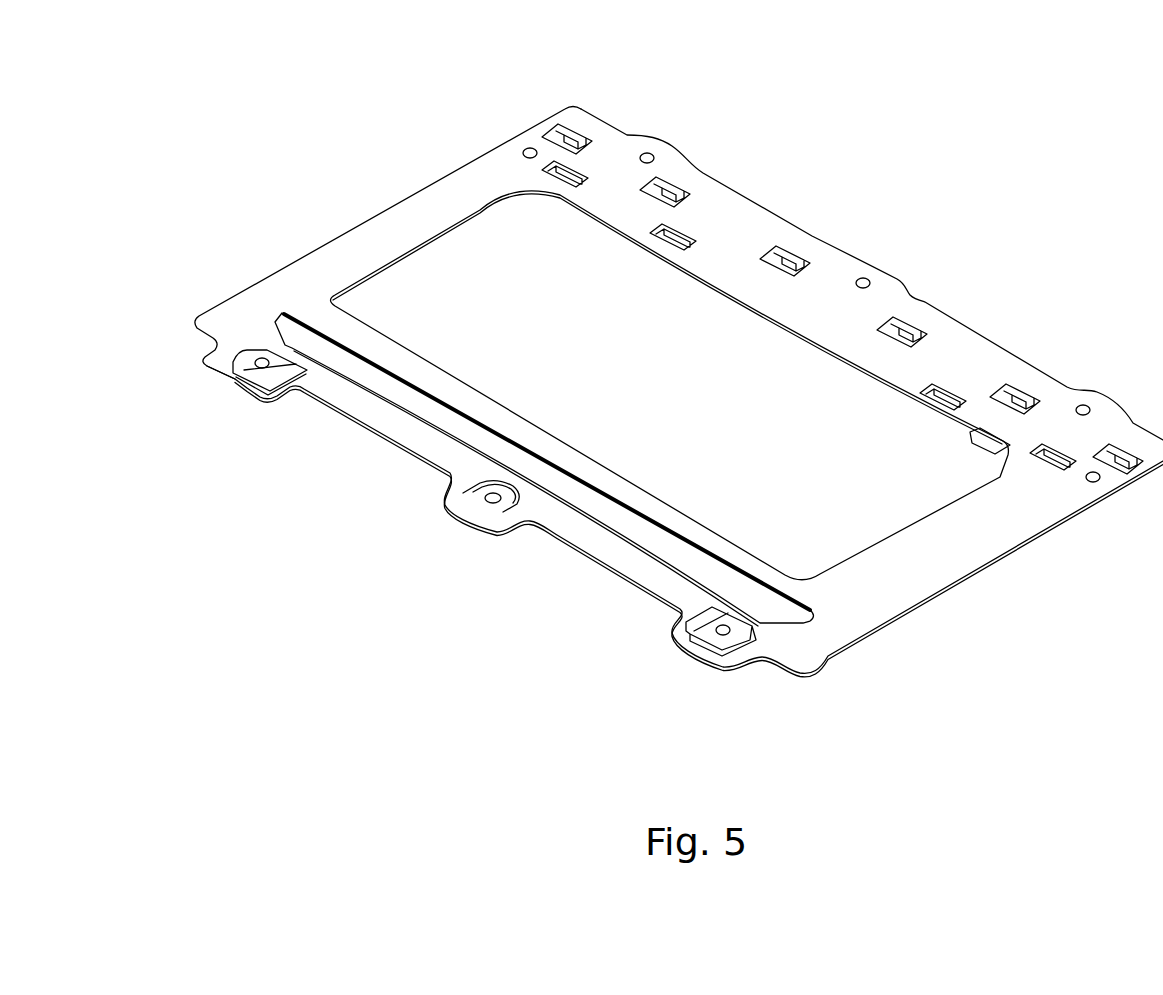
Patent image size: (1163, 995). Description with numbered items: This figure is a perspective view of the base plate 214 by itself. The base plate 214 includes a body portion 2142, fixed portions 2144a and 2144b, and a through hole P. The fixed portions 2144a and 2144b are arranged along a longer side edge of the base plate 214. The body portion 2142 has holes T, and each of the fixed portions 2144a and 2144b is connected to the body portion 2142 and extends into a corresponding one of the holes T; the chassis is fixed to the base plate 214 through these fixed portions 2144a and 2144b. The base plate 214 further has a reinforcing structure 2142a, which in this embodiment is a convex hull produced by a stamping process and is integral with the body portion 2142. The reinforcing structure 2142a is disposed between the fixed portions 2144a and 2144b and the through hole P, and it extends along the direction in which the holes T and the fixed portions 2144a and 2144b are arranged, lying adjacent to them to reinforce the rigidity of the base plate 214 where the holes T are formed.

The base plate 214 is at (270, 61).
The body portion 2142 is at (943, 567).
The reinforcing structure 2142a is at (812, 612).
The fixed portion 2144a is at (485, 492).
The fixed portion 2144b is at (247, 348).
The through hole P is at (757, 350).
The holes T is at (236, 377).